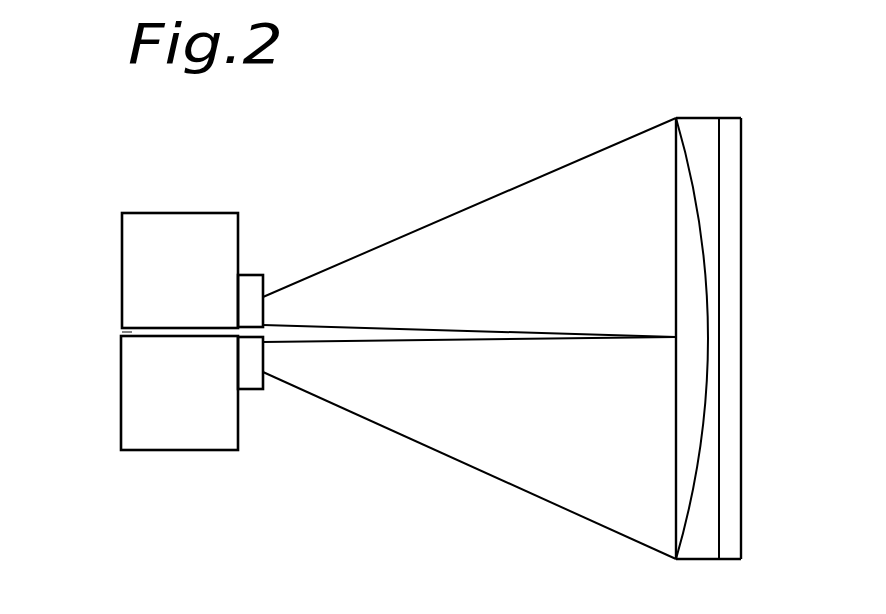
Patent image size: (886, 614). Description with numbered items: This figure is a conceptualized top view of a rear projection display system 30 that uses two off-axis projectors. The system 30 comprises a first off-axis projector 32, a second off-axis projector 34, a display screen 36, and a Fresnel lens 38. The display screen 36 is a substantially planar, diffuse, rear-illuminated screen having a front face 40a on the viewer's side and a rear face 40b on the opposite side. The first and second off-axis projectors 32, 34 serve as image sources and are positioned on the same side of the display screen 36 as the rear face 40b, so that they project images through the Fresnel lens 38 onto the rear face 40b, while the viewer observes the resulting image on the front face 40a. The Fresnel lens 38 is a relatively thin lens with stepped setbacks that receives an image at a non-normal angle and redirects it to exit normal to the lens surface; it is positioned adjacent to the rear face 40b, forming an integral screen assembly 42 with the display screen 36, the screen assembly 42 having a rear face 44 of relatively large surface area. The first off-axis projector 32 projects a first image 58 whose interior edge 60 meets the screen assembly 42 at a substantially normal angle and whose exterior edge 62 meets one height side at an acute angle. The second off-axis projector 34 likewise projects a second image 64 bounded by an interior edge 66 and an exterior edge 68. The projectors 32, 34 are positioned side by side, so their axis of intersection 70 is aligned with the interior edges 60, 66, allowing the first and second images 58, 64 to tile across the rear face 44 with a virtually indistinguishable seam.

The projection display system 30 is at (310, 144).
The first off-axis projector 32 is at (163, 288).
The second off-axis projector 34 is at (163, 413).
The axis of intersection 70 is at (122, 332).
The first image 58 is at (469, 227).
The interior edge of the first image 60 is at (488, 332).
The exterior edge of the first image 62 is at (553, 167).
The second image 64 is at (469, 448).
The interior edge of the second image 66 is at (450, 342).
The exterior edge of the second image 68 is at (470, 465).
The display screen 36 is at (718, 330).
The Fresnel lens 38 is at (707, 170).
The screen assembly 42 is at (693, 118).
The rear face of the screen assembly 44 is at (676, 167).
The front face 40a is at (741, 530).
The rear face 40b is at (718, 532).